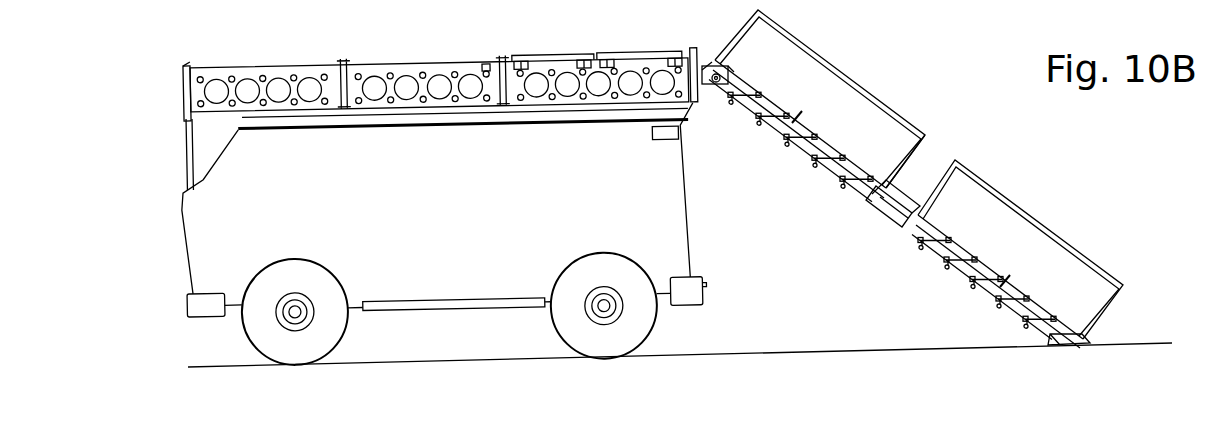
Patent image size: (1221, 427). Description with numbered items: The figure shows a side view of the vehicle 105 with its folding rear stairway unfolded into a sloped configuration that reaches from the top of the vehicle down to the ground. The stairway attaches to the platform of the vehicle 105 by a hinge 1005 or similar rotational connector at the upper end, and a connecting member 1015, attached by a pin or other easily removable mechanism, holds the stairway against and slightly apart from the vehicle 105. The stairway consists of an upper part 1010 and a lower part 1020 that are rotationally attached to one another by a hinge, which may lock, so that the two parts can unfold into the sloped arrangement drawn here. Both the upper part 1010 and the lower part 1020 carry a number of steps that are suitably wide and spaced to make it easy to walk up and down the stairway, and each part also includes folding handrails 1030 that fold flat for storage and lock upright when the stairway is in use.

The vehicle 105 is at (438, 218).
The hinge 1005 is at (710, 95).
The upper part 1010 is at (823, 160).
The connecting member 1015 is at (877, 212).
The lower part 1020 is at (998, 293).
The folding handrails 1030 is at (857, 80).